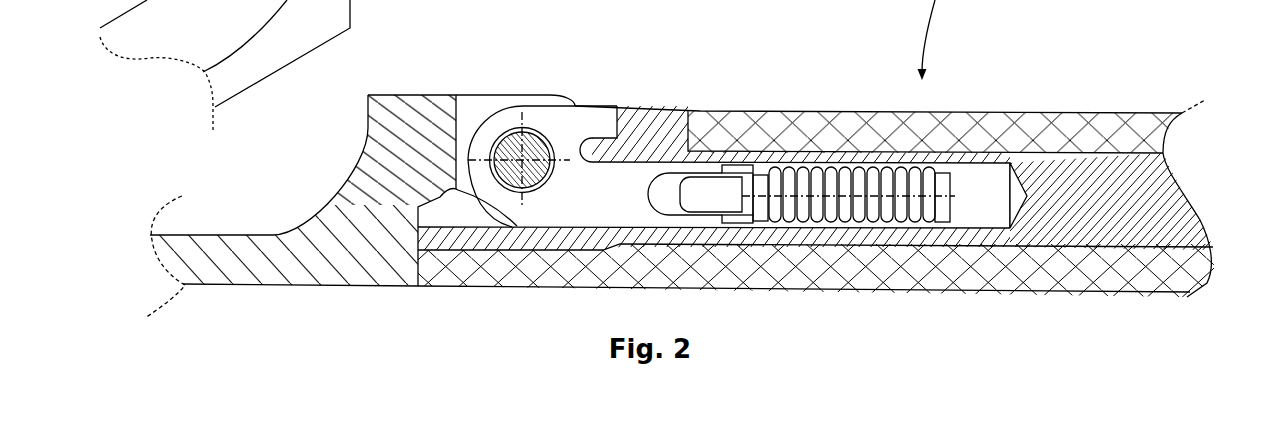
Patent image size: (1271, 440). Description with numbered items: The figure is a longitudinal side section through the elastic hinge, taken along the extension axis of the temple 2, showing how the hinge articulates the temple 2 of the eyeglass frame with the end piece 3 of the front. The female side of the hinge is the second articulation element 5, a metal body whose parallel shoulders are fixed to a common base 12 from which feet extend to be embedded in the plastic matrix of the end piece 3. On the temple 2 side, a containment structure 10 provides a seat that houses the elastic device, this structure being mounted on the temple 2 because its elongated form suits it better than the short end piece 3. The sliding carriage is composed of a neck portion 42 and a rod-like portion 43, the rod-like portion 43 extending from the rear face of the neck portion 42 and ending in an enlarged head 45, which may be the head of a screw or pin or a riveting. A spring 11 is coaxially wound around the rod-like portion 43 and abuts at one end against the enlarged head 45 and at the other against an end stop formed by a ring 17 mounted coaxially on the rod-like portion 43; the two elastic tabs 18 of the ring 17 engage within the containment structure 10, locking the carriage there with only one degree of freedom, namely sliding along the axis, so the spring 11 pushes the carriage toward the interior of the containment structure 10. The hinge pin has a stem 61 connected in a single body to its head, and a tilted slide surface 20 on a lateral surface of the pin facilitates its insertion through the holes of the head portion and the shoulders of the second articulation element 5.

The temple 2 is at (1030, 132).
The end piece 3 is at (221, 258).
The second articulation element 5 is at (304, 170).
The containment structure 10 is at (1062, 190).
The spring 11 is at (905, 180).
The common base 12 is at (413, 115).
The ring 17 is at (753, 190).
The elastic tabs 18 is at (698, 193).
The tilted slide surface 20 is at (526, 136).
The neck portion 42 is at (607, 197).
The rod-like portion 43 is at (860, 195).
The enlarged head 45 is at (945, 183).
The stem 61 is at (530, 150).